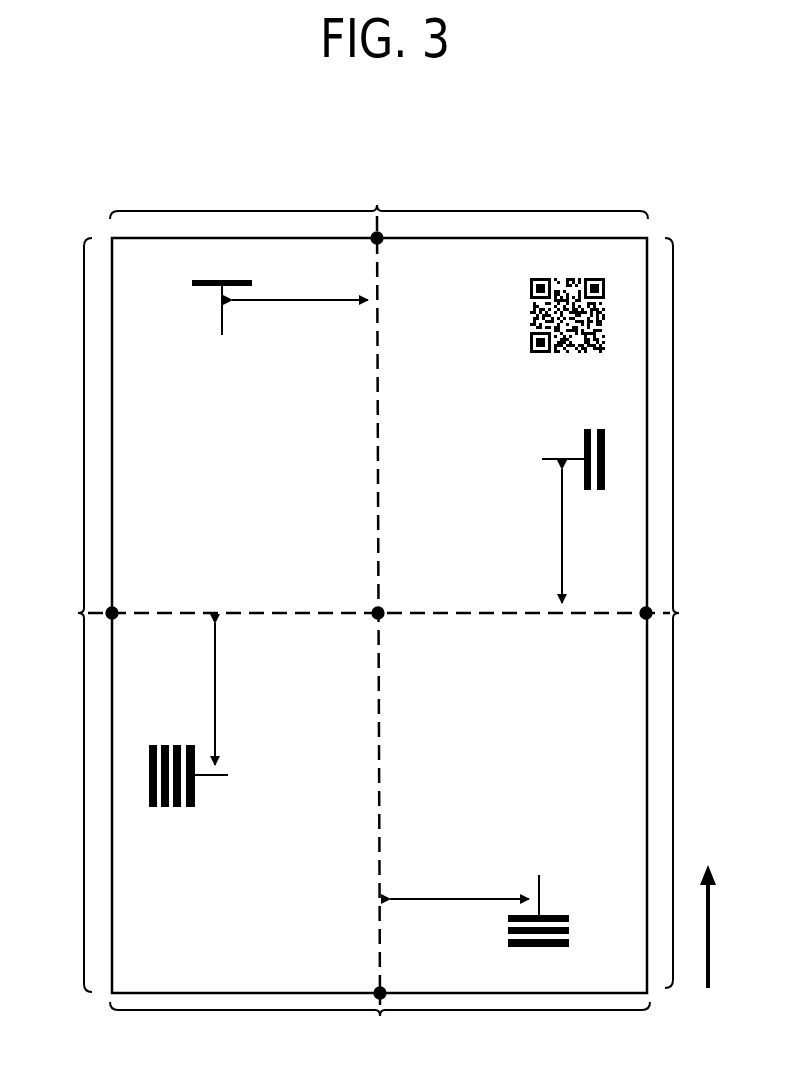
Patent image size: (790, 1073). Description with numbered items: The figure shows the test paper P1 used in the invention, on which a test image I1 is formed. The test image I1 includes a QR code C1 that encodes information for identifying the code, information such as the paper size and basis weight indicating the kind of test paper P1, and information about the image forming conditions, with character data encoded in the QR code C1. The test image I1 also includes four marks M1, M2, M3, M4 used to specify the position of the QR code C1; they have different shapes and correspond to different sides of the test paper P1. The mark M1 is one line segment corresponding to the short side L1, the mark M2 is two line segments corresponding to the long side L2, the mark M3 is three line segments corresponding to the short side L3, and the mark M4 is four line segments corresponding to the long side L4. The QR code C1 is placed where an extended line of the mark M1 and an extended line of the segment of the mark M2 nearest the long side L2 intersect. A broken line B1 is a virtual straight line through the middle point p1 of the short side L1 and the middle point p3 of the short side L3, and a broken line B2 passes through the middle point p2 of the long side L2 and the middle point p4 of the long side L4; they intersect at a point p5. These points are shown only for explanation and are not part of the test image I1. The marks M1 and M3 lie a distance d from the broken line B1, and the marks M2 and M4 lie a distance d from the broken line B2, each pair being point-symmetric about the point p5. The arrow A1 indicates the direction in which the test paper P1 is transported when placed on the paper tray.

The test paper P1 is at (379, 579).
The test image I1 is at (525, 238).
The short side L1 is at (379, 192).
The long side L2 is at (691, 613).
The short side L3 is at (380, 1028).
The long side L4 is at (68, 615).
The broken line B1 is at (378, 473).
The broken line B2 is at (505, 616).
The middle point p1 is at (381, 245).
The middle point p2 is at (643, 610).
The middle point p3 is at (377, 991).
The middle point p4 is at (115, 610).
The point p5 is at (374, 610).
The mark M1 is at (198, 288).
The mark M2 is at (589, 429).
The mark M3 is at (563, 914).
The mark M4 is at (176, 808).
The QR code C1 is at (525, 316).
The arrow A1 is at (727, 926).
The distance d is at (388, 586).